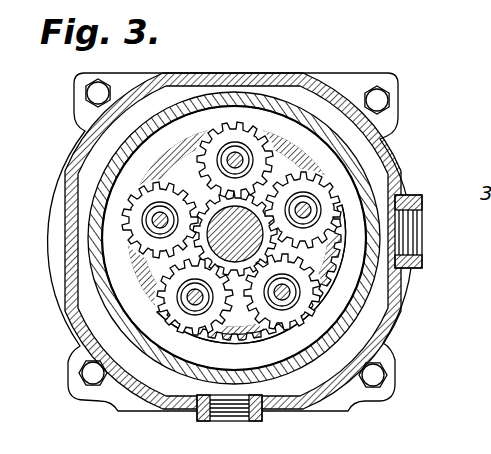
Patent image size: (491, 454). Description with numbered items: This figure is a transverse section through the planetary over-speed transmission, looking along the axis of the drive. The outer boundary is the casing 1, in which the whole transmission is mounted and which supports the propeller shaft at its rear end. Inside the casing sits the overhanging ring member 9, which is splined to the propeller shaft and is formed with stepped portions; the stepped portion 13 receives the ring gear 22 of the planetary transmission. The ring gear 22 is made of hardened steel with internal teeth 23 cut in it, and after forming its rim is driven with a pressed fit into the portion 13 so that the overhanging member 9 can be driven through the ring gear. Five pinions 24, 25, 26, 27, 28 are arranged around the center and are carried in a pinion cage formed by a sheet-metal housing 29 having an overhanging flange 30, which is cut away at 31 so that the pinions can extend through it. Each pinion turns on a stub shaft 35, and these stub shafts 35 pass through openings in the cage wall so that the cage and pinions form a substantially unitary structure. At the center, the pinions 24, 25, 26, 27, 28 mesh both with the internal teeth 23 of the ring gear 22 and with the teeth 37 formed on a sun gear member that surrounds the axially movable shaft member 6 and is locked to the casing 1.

The casing 1 is at (72, 188).
The axially movable shaft member 6 is at (332, 274).
The overhanging ring member 9 is at (404, 197).
The stepped portion 13 is at (343, 165).
The ring gear 22 is at (362, 178).
The internal teeth 23 is at (264, 150).
The pinion 24 is at (277, 134).
The pinion 25 is at (383, 193).
The pinion 26 is at (300, 301).
The pinion 27 is at (205, 318).
The pinion 28 is at (152, 240).
The housing 29 is at (254, 342).
The overhanging flange 30 is at (237, 308).
The cut away portion 31 is at (214, 326).
The stub shaft 35 is at (308, 213).
The sun gear teeth 37 is at (283, 241).